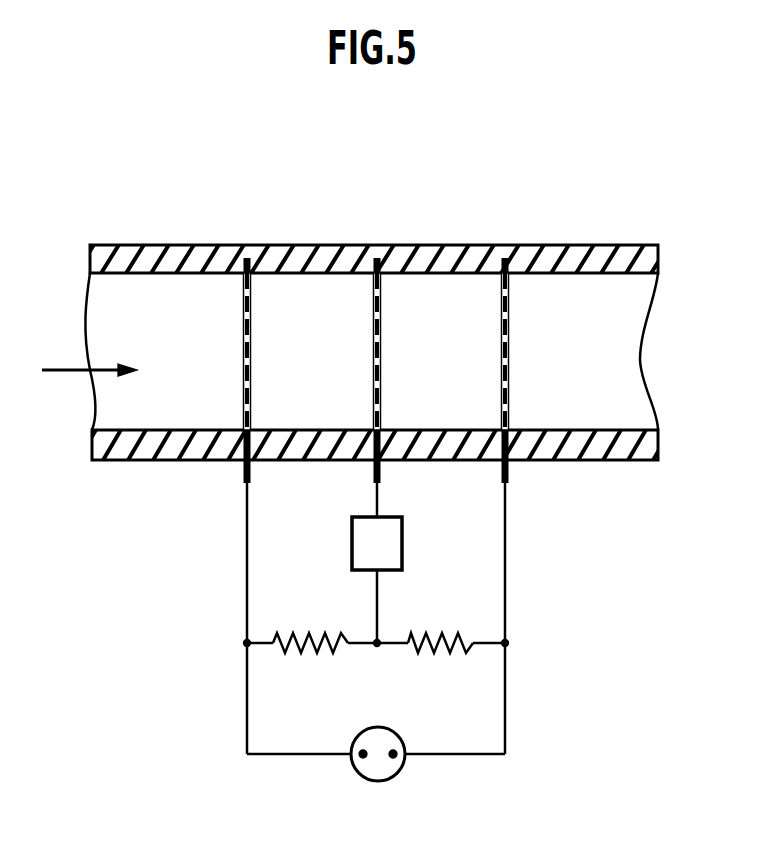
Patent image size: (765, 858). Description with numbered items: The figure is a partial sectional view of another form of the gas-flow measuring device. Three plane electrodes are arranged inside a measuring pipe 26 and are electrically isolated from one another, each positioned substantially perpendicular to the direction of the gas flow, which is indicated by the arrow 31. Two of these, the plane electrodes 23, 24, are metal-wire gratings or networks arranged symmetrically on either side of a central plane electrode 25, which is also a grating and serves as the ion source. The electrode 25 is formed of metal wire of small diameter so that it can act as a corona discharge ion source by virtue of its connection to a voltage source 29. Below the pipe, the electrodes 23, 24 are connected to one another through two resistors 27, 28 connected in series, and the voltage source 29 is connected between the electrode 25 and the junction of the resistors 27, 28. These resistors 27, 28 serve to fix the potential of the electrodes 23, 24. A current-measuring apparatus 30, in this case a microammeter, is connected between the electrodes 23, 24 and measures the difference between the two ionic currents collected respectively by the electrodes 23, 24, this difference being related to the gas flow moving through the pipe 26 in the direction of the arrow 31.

The plane electrode 23 is at (243, 355).
The plane electrode 24 is at (510, 352).
The plane electrode serving as ion source 25 is at (373, 355).
The measuring pipe 26 is at (165, 262).
The resistor 27 is at (316, 637).
The resistor 28 is at (421, 637).
The voltage source 29 is at (366, 551).
The current-measuring apparatus 30 is at (378, 766).
The arrow 31 is at (89, 356).